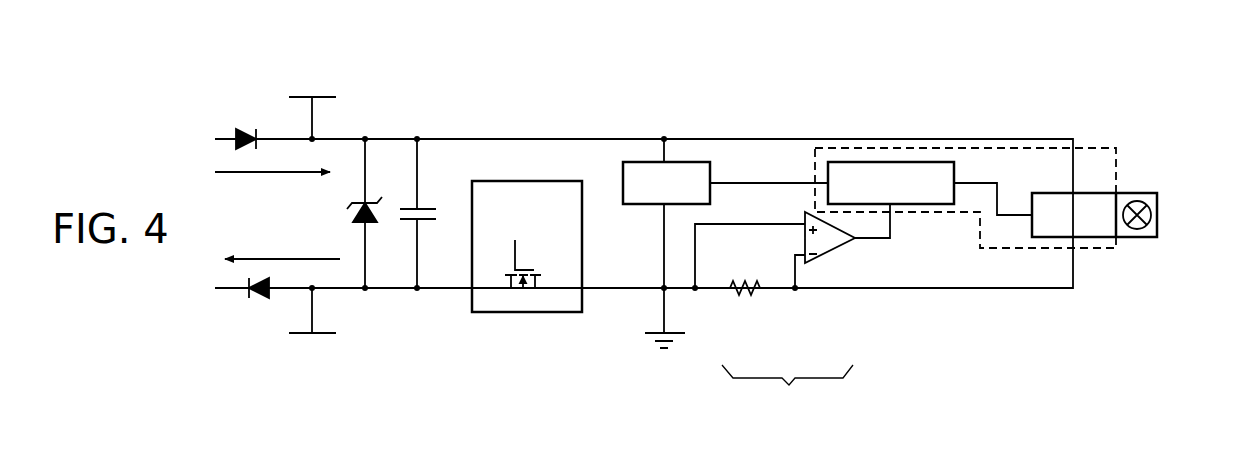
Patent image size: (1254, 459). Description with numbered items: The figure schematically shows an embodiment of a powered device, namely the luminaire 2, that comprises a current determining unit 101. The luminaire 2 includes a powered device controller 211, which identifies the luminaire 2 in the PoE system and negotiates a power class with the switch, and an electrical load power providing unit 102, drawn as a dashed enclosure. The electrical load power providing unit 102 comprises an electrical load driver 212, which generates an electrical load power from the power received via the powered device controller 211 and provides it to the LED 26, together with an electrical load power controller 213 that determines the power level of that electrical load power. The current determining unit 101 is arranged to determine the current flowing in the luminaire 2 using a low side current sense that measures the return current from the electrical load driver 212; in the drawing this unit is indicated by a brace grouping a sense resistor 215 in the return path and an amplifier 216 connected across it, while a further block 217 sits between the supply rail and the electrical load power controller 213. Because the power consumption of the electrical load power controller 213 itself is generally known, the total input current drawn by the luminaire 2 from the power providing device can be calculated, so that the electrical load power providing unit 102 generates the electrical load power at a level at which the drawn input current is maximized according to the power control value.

The luminaire 2 is at (563, 99).
The LED 26 is at (1142, 237).
The current determining unit 101 is at (787, 393).
The electrical load power providing unit 102 is at (1097, 147).
The powered device controller 211 is at (532, 313).
The electrical load driver 212 is at (1102, 238).
The electrical load power controller 213 is at (902, 160).
The shunt resistor 215 is at (741, 308).
The operational amplifier 216 is at (836, 266).
The voltage regulator 217 is at (683, 160).